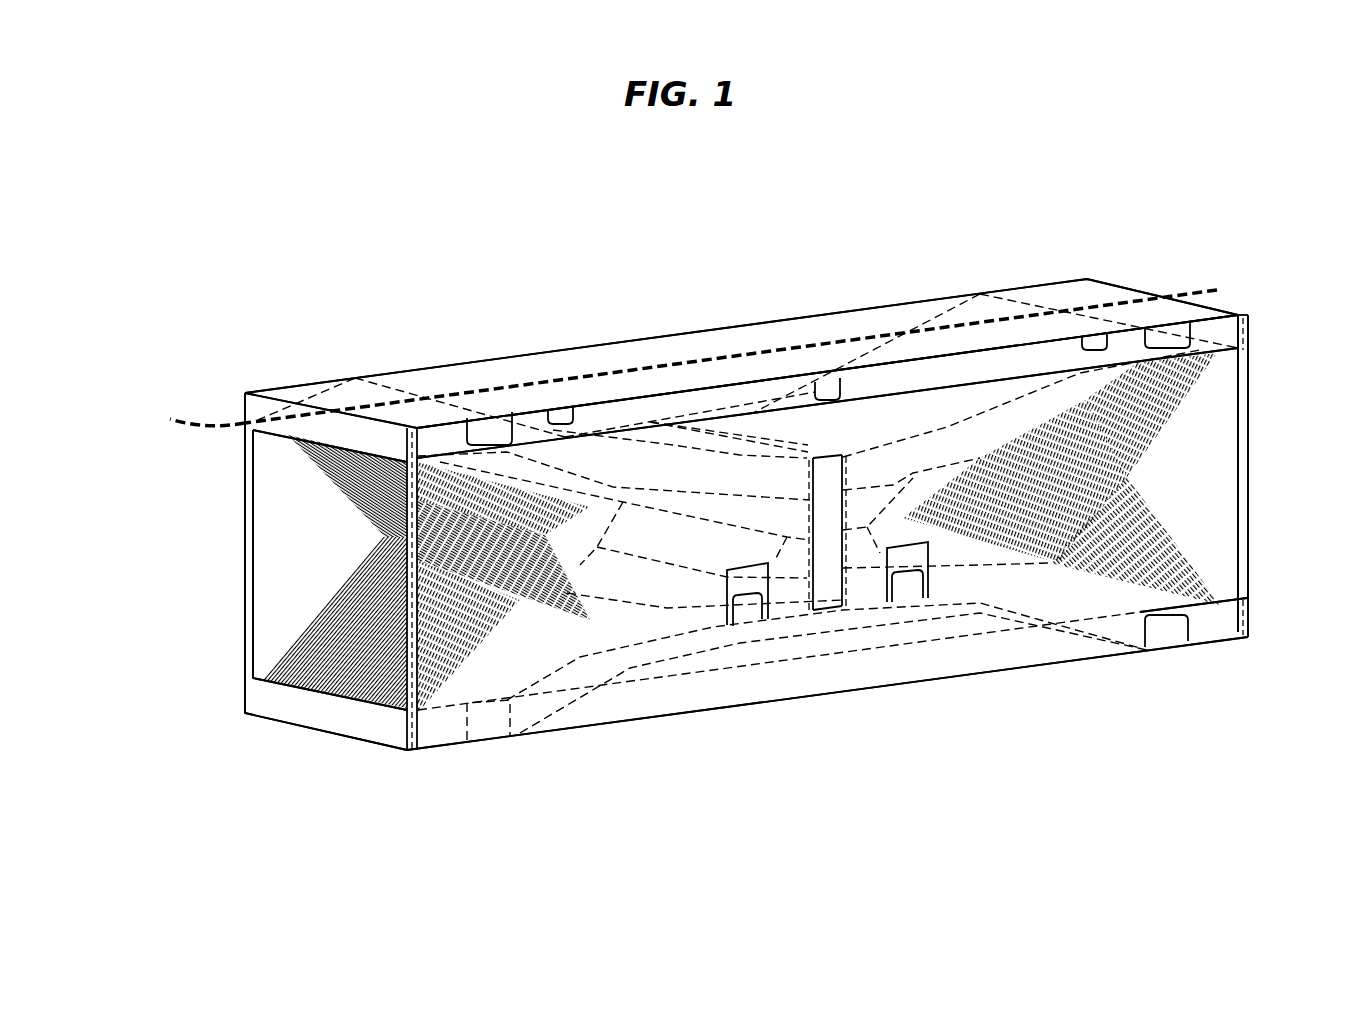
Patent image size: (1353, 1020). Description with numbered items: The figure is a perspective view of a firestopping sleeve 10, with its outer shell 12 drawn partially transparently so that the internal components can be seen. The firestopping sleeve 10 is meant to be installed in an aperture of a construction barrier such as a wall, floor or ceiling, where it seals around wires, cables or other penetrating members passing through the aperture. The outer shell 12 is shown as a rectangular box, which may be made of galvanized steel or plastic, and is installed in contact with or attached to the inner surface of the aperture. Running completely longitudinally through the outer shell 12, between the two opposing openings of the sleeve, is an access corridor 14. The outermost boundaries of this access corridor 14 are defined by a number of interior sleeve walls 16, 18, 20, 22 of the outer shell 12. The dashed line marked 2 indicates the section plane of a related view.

The firestopping sleeve 10 is at (418, 293).
The outer shell 12 is at (1052, 262).
The access corridor 14 is at (270, 560).
The interior sleeve wall 16 is at (270, 514).
The interior sleeve wall 18 is at (766, 368).
The interior sleeve wall 20 is at (1222, 528).
The interior sleeve wall 22 is at (598, 728).
The section line 2 is at (669, 350).